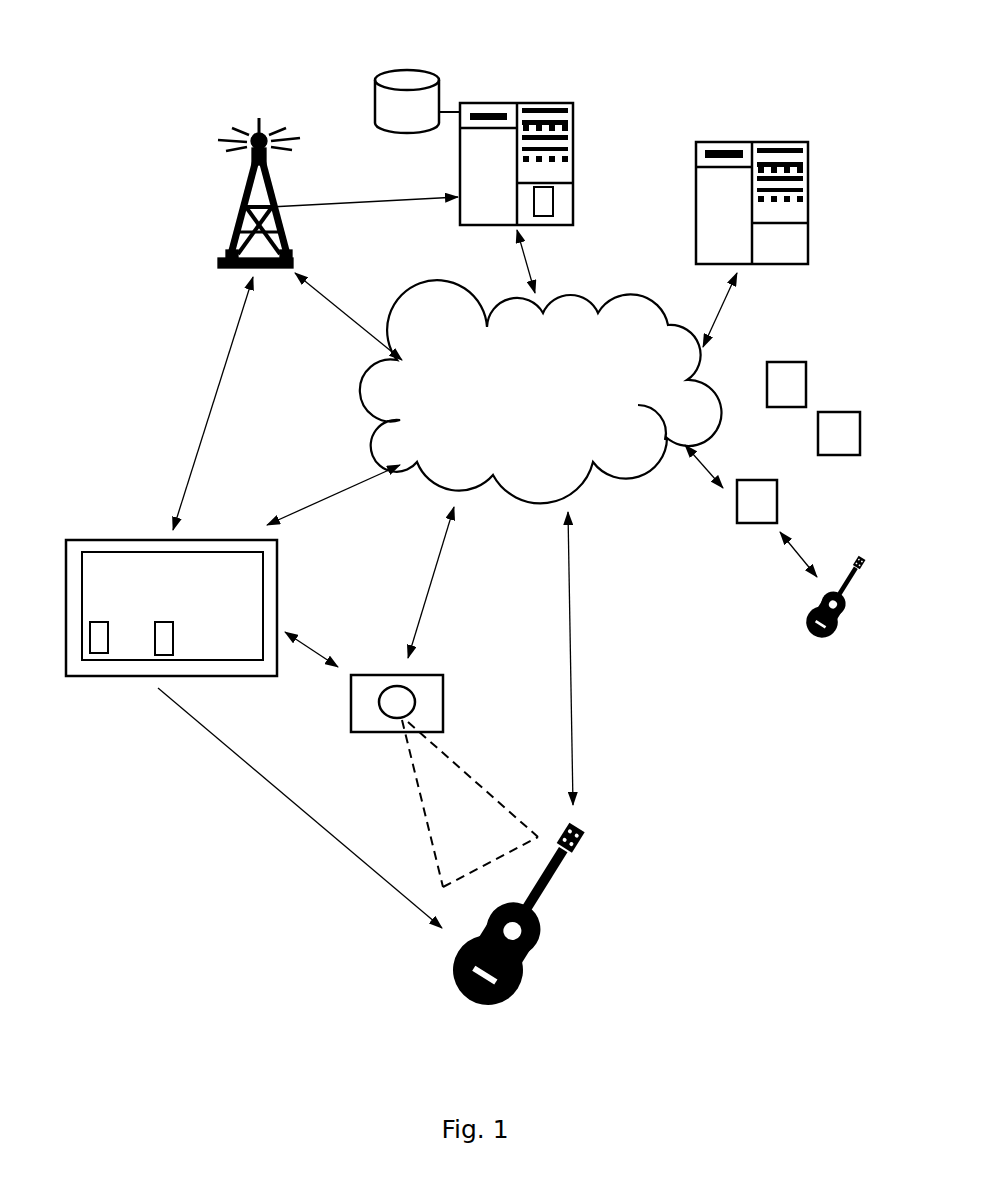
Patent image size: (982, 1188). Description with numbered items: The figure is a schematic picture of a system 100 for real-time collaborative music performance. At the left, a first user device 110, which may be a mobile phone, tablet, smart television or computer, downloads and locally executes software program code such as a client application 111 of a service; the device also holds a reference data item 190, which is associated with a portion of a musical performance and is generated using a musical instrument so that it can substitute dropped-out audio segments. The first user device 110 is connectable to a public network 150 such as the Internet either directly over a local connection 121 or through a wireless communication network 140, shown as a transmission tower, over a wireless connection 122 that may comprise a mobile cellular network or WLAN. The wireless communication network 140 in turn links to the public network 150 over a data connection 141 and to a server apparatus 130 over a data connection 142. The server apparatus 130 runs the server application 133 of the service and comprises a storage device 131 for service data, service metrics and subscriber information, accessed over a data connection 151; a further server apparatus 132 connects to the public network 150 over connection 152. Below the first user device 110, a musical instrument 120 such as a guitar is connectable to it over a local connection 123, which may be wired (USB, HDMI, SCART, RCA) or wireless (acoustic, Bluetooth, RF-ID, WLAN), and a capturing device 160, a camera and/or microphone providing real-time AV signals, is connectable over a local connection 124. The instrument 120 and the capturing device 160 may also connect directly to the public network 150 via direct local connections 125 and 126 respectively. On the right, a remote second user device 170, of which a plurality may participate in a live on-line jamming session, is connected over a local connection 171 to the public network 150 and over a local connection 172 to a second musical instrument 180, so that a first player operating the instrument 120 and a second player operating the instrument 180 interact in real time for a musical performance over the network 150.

The system 100 is at (122, 66).
The first user device 110 is at (88, 673).
The client application 111 is at (108, 621).
The reference data item 190 is at (173, 621).
The musical instrument 120 is at (541, 937).
The local connection 121 is at (360, 486).
The wireless connection 122 is at (210, 396).
The local connection 123 is at (305, 812).
The local connection 124 is at (320, 650).
The direct local connection 125 is at (573, 706).
The direct local connection 126 is at (433, 575).
The server apparatus 130 is at (556, 103).
The storage device 131 is at (420, 68).
The server apparatus 132 is at (745, 142).
The server application 133 is at (570, 182).
The wireless communication network 140 is at (248, 190).
The data connection 141 is at (348, 312).
The data connection 142 is at (380, 199).
The public network 150 is at (517, 416).
The data connection 151 is at (530, 270).
The communication link between second server and network 152 is at (713, 328).
The capturing device 160 is at (444, 699).
The second user device 170 is at (778, 503).
The local connection 171 is at (715, 458).
The local connection 172 is at (800, 552).
The second musical instrument 180 is at (827, 638).